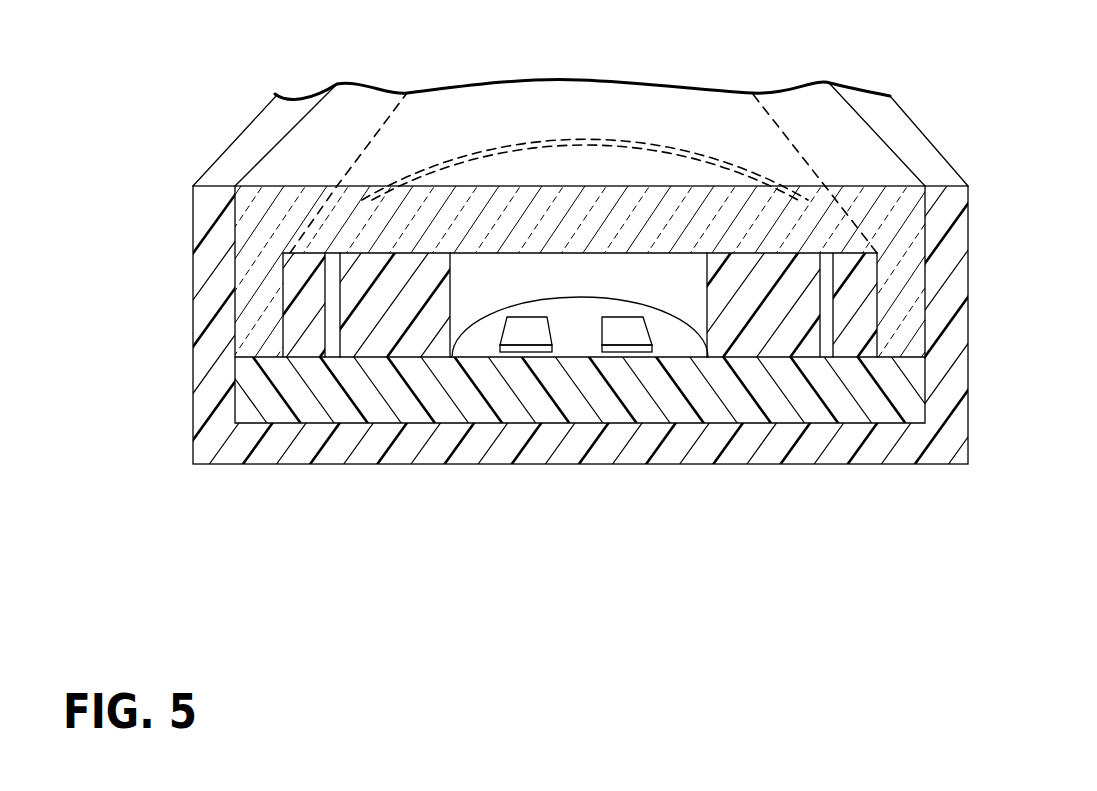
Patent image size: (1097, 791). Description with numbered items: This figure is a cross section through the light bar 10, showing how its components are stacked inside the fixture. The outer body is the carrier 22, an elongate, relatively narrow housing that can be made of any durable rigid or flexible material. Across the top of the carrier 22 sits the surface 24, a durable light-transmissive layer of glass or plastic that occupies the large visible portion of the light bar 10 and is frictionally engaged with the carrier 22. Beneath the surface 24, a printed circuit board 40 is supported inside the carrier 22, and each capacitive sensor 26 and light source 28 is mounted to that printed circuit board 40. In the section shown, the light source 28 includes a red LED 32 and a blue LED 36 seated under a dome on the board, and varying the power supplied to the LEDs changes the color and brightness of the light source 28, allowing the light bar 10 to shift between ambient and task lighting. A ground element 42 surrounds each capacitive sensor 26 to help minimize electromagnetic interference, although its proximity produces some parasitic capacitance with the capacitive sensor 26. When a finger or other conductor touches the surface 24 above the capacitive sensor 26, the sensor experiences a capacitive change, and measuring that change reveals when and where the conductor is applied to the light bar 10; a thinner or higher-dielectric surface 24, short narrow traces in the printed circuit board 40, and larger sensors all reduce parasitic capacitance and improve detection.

The light bar 10 is at (163, 123).
The carrier 22 is at (952, 248).
The surface 24 is at (268, 232).
The capacitive sensor 26 is at (765, 320).
The light source 28 is at (482, 340).
The red LED 32 is at (528, 333).
The blue LED 36 is at (625, 337).
The printed circuit board 40 is at (303, 402).
The ground element 42 is at (857, 328).